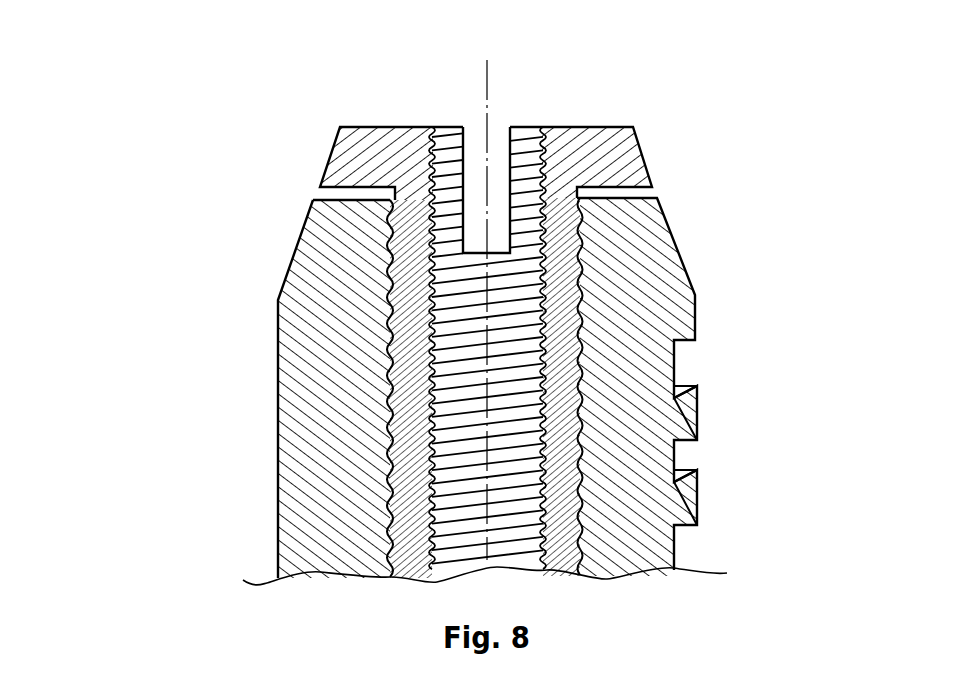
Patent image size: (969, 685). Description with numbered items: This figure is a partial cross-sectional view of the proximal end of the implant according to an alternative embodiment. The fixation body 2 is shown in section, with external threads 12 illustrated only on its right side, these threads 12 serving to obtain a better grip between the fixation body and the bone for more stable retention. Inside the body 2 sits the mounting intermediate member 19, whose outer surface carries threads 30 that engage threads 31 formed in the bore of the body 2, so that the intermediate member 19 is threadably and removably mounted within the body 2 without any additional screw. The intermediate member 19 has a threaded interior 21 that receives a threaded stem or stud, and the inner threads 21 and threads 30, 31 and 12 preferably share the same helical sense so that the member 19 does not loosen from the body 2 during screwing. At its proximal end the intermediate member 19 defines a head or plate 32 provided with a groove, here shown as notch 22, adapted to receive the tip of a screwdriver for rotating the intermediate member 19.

The body 2 is at (266, 367).
The threads 12 is at (697, 410).
The mounting intermediate member 19 is at (560, 305).
The threaded interior 21 is at (540, 362).
The notch 22 is at (508, 188).
The threads 30 is at (390, 335).
The threads 31 is at (393, 412).
The head or plate 32 is at (647, 160).